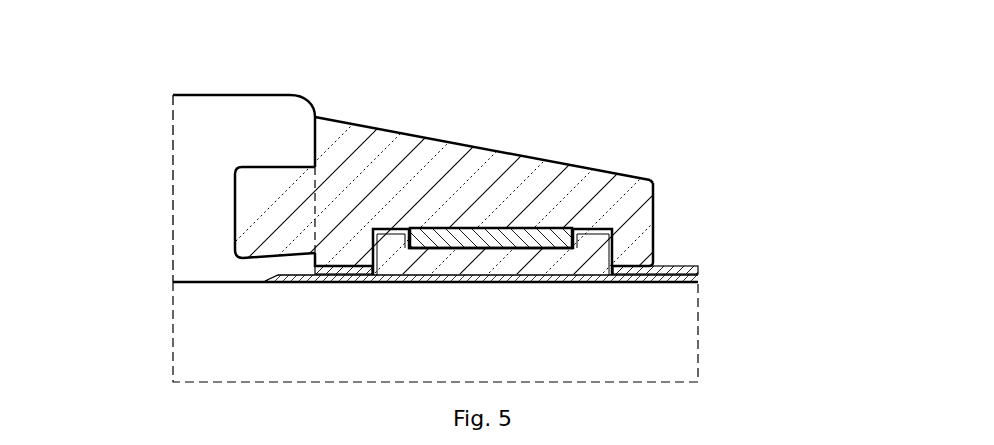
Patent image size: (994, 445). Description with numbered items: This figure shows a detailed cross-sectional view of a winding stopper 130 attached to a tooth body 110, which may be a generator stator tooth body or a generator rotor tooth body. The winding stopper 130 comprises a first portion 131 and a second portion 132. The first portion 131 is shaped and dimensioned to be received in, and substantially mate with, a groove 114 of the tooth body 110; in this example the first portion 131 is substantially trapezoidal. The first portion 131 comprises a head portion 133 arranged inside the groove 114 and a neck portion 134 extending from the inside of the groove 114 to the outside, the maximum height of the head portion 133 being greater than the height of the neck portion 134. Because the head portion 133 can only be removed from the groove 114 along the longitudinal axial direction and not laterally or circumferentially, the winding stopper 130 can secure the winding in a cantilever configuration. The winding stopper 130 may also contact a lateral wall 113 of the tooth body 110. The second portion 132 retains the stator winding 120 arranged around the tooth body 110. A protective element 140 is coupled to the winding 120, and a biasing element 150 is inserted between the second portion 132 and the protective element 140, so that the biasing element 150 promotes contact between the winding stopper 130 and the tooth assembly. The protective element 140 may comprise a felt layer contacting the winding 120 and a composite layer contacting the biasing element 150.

The tooth body 110 is at (190, 133).
The lateral wall 113 is at (317, 133).
The groove 114 is at (290, 163).
The stator winding 120 is at (685, 322).
The winding stopper 130 is at (767, 194).
The first portion 131 is at (258, 165).
The second portion 132 is at (531, 176).
The head portion 133 is at (250, 230).
The neck portion 134 is at (310, 202).
The protective element 140 is at (615, 264).
The biasing element 150 is at (557, 227).